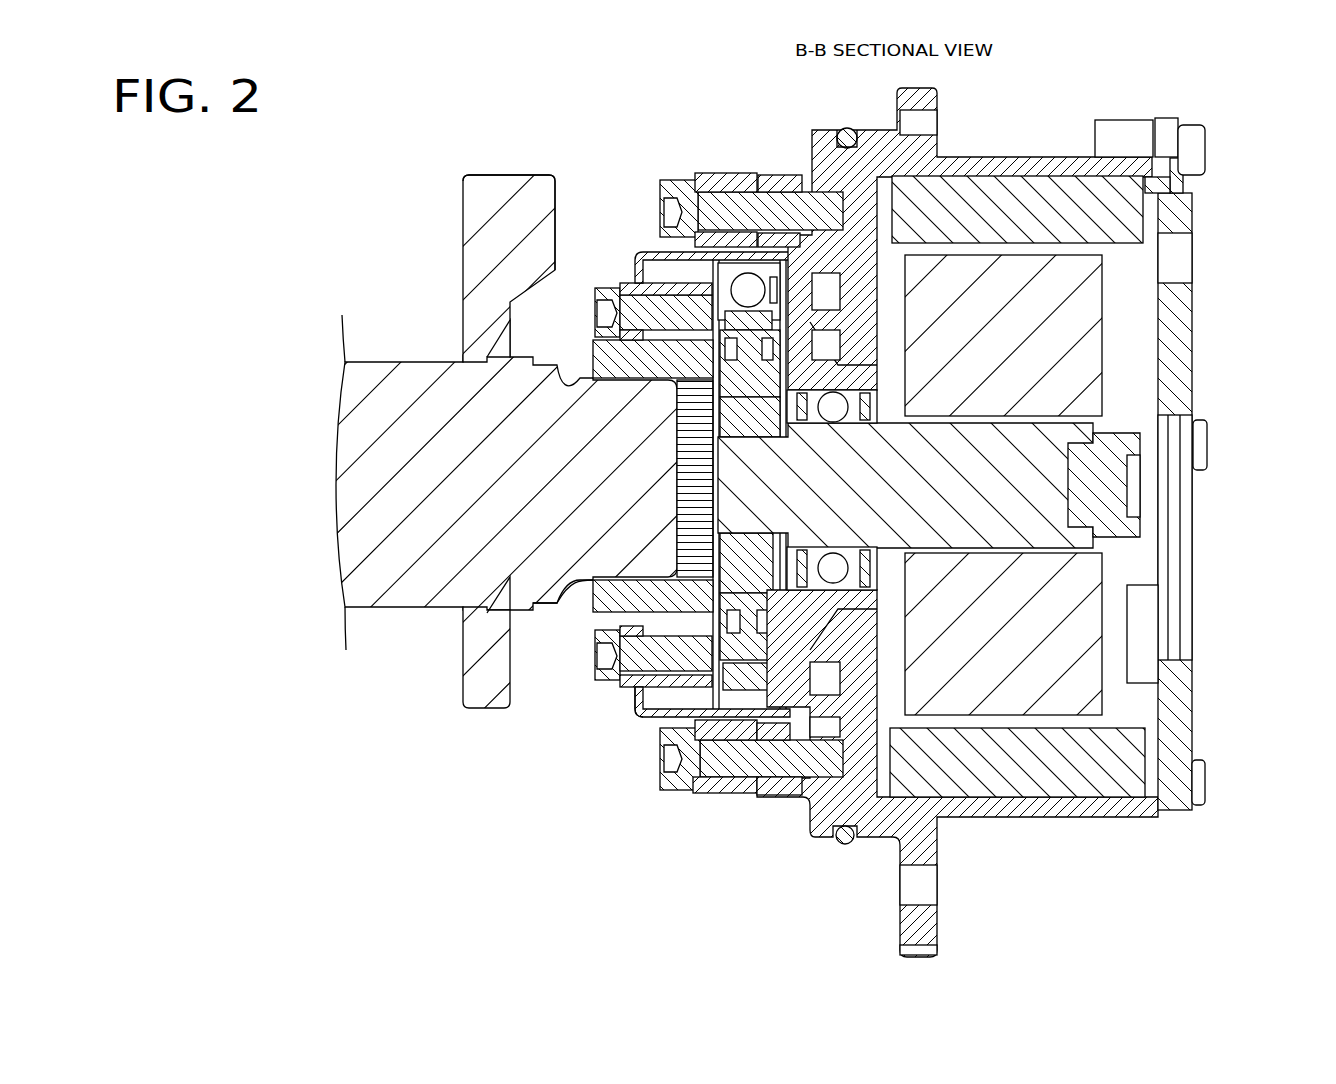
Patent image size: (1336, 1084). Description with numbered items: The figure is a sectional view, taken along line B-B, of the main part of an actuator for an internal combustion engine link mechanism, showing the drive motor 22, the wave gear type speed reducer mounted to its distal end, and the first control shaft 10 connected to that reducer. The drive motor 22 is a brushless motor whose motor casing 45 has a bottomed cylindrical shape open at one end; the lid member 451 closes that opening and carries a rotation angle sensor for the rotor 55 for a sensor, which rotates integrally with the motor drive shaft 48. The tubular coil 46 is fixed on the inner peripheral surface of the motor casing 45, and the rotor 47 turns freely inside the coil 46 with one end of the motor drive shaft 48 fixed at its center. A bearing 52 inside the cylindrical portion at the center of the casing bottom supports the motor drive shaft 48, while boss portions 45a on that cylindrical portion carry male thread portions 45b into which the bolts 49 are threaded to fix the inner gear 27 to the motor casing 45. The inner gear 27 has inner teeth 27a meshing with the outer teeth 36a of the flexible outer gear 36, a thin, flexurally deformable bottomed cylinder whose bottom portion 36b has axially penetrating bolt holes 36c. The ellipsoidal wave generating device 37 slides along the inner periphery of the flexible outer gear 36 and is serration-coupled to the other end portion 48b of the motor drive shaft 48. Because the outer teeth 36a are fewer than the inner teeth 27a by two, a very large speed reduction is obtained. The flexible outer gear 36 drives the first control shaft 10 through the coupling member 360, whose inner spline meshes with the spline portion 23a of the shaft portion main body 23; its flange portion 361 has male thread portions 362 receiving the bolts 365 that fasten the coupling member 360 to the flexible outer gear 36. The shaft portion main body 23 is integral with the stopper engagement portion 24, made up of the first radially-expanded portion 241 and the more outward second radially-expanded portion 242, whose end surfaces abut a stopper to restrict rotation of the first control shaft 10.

The first control shaft 10 is at (575, 432).
The drive motor 22 is at (933, 509).
The shaft portion main body 23 is at (506, 501).
The spline portion 23a is at (597, 602).
The stopper engagement portion 24 is at (509, 224).
The first radially-expanded portion 241 is at (482, 692).
The second radially-expanded portion 242 is at (527, 183).
The inner gear 27 is at (708, 805).
The inner teeth 27a is at (648, 712).
The flexible outer gear 36 is at (593, 542).
The outer teeth 36a is at (745, 722).
The bottom portion 36b is at (636, 270).
The bolt holes 36c is at (625, 290).
The coupling member 360 is at (630, 650).
The flange portion 361 is at (600, 410).
The male thread portions 362 is at (648, 672).
The bolts 365 is at (597, 297).
The wave generating device 37 is at (905, 700).
The motor casing 45 is at (1000, 152).
The boss portions 45a is at (735, 170).
The male thread portions 45b is at (775, 193).
The lid member 451 is at (1180, 290).
The coil 46 is at (1110, 772).
The rotor 47 is at (1065, 660).
The motor drive shaft 48 is at (1055, 485).
The another end portion 48b is at (617, 337).
The bolts 49 is at (672, 180).
The bearing 52 is at (890, 568).
The rotor for a sensor 55 is at (1120, 440).